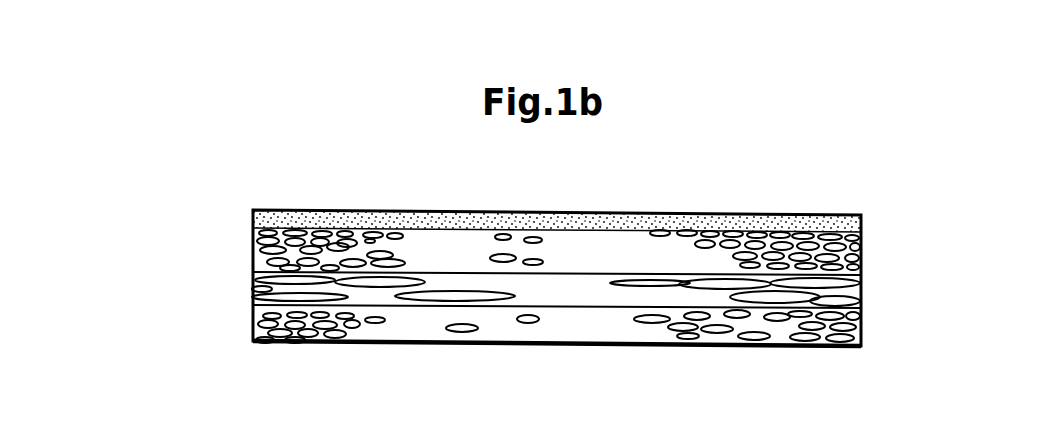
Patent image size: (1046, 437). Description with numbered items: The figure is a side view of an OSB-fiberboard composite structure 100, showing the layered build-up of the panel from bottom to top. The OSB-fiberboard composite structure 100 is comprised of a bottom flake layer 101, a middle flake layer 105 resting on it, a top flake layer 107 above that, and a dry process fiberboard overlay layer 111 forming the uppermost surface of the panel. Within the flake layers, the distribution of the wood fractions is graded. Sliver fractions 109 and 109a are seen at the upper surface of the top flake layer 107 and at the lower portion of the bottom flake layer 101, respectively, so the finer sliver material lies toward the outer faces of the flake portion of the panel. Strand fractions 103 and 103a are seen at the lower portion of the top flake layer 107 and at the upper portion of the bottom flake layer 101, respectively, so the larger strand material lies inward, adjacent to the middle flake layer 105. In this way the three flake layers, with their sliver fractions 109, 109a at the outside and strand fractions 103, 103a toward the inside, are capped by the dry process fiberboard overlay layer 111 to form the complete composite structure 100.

The OSB-fiberboard composite structure 100 is at (633, 172).
The bottom flake layer 101 is at (861, 322).
The strand fraction 103 is at (254, 307).
The strand fraction 103a is at (254, 256).
The middle flake layer 105 is at (861, 297).
The top flake layer 107 is at (861, 253).
The sliver fraction 109 is at (254, 239).
The sliver fraction 109a is at (254, 322).
The dry process fiberboard overlay layer 111 is at (861, 224).